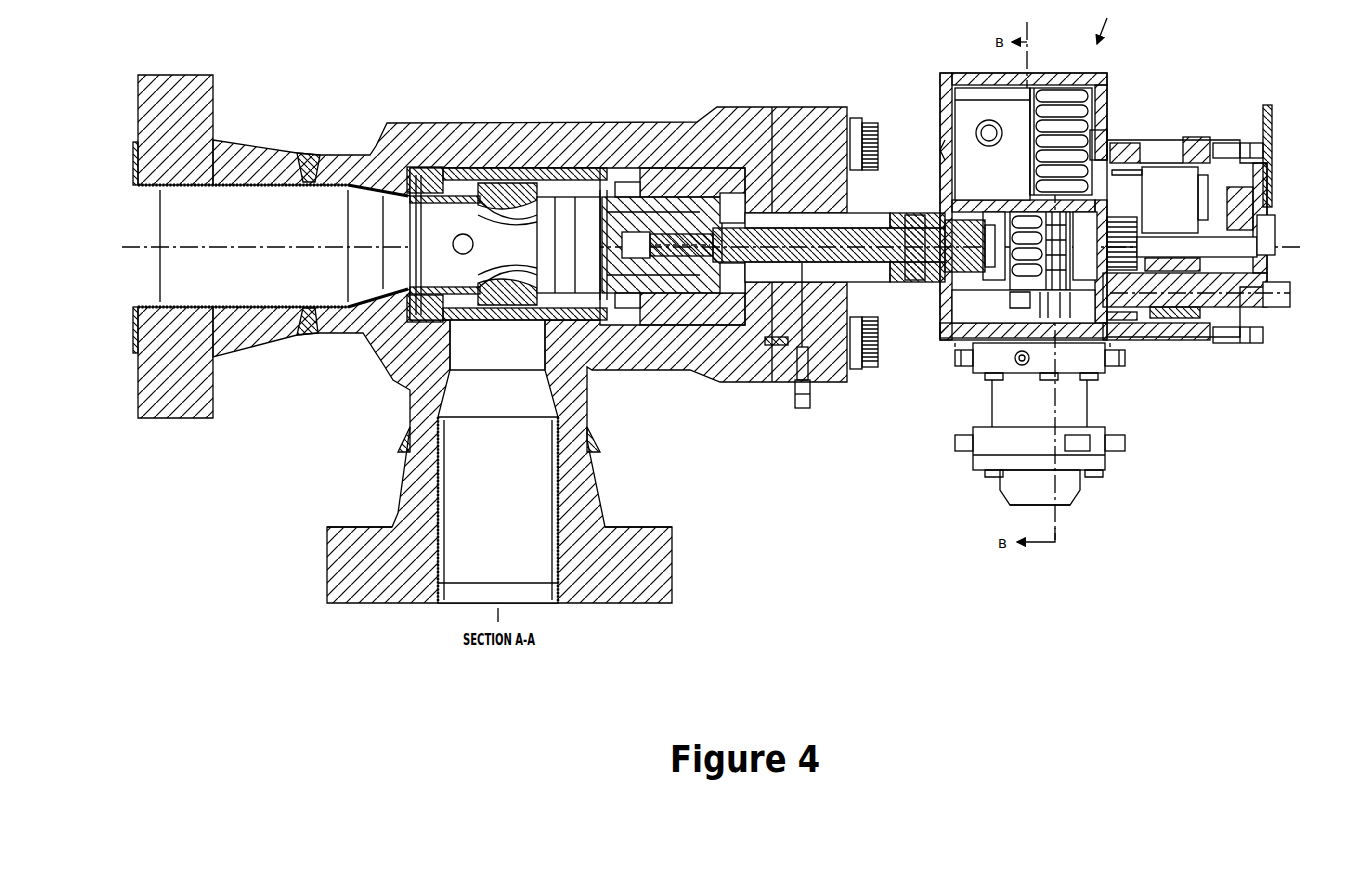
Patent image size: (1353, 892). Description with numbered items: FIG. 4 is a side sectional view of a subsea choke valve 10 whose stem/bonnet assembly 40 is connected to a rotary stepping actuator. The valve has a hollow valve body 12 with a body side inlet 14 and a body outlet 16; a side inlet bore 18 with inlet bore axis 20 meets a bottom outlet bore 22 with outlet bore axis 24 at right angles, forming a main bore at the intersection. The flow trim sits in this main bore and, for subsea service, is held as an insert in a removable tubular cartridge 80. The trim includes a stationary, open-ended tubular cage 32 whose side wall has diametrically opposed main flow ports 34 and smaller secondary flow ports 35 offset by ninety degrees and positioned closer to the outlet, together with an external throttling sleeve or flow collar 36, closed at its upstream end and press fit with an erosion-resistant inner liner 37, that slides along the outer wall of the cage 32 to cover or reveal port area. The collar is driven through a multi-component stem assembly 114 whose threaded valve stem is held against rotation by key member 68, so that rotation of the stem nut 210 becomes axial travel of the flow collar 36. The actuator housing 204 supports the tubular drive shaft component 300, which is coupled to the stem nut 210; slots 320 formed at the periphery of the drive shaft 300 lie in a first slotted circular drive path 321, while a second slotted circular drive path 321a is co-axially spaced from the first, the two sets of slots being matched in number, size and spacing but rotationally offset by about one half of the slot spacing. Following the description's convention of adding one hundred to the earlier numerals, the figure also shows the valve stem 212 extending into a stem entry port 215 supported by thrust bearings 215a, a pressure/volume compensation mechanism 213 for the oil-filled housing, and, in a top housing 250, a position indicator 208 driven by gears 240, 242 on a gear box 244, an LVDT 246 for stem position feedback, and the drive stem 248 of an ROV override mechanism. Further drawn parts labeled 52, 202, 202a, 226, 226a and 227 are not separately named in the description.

The choke valve 10 is at (330, 133).
The hollow valve body 12 is at (386, 120).
The body side inlet 14 is at (556, 572).
The body outlet 16 is at (168, 306).
The side inlet bore 18 is at (440, 558).
The inlet bore axis 20 is at (500, 522).
The bottom outlet bore 22 is at (235, 306).
The outlet bore axis 24 is at (204, 243).
The cage 32 is at (456, 186).
The main flow ports 34 is at (508, 222).
The secondary flow ports 35 is at (460, 255).
The flow collar 36 is at (565, 160).
The inner liner 37 is at (562, 205).
The stem/bonnet assembly 40 is at (790, 122).
The throat 52 is at (463, 323).
The key member 68 is at (890, 196).
The removable tubular cartridge 80 is at (510, 170).
The multi-component stem assembly 114 is at (745, 330).
The nozzle 202 is at (1082, 496).
The nozzle end 202a is at (1005, 500).
The actuator housing 204 is at (972, 95).
The mounting bracket 208 is at (1273, 165).
The stem nut 210 is at (928, 286).
The bolt 212 is at (898, 380).
The housing wall 213 is at (945, 92).
The stem adapter 215 is at (938, 216).
The adapter sleeve 215a is at (952, 222).
The actuator housing 226 is at (1110, 150).
The housing extension 226a is at (1057, 82).
The fastener 227 is at (958, 350).
The gear 240 is at (1120, 212).
The motor 242 is at (1175, 175).
The block 244 is at (1200, 136).
The drive shaft 246 is at (1246, 246).
The output shaft 248 is at (1282, 312).
The bearing 250 is at (1180, 345).
The tubular drive shaft component 300 is at (985, 380).
The slots 320 is at (1042, 251).
The first slotted circular drive path 321 is at (1055, 98).
The second slotted circular drive path 321a is at (1003, 108).